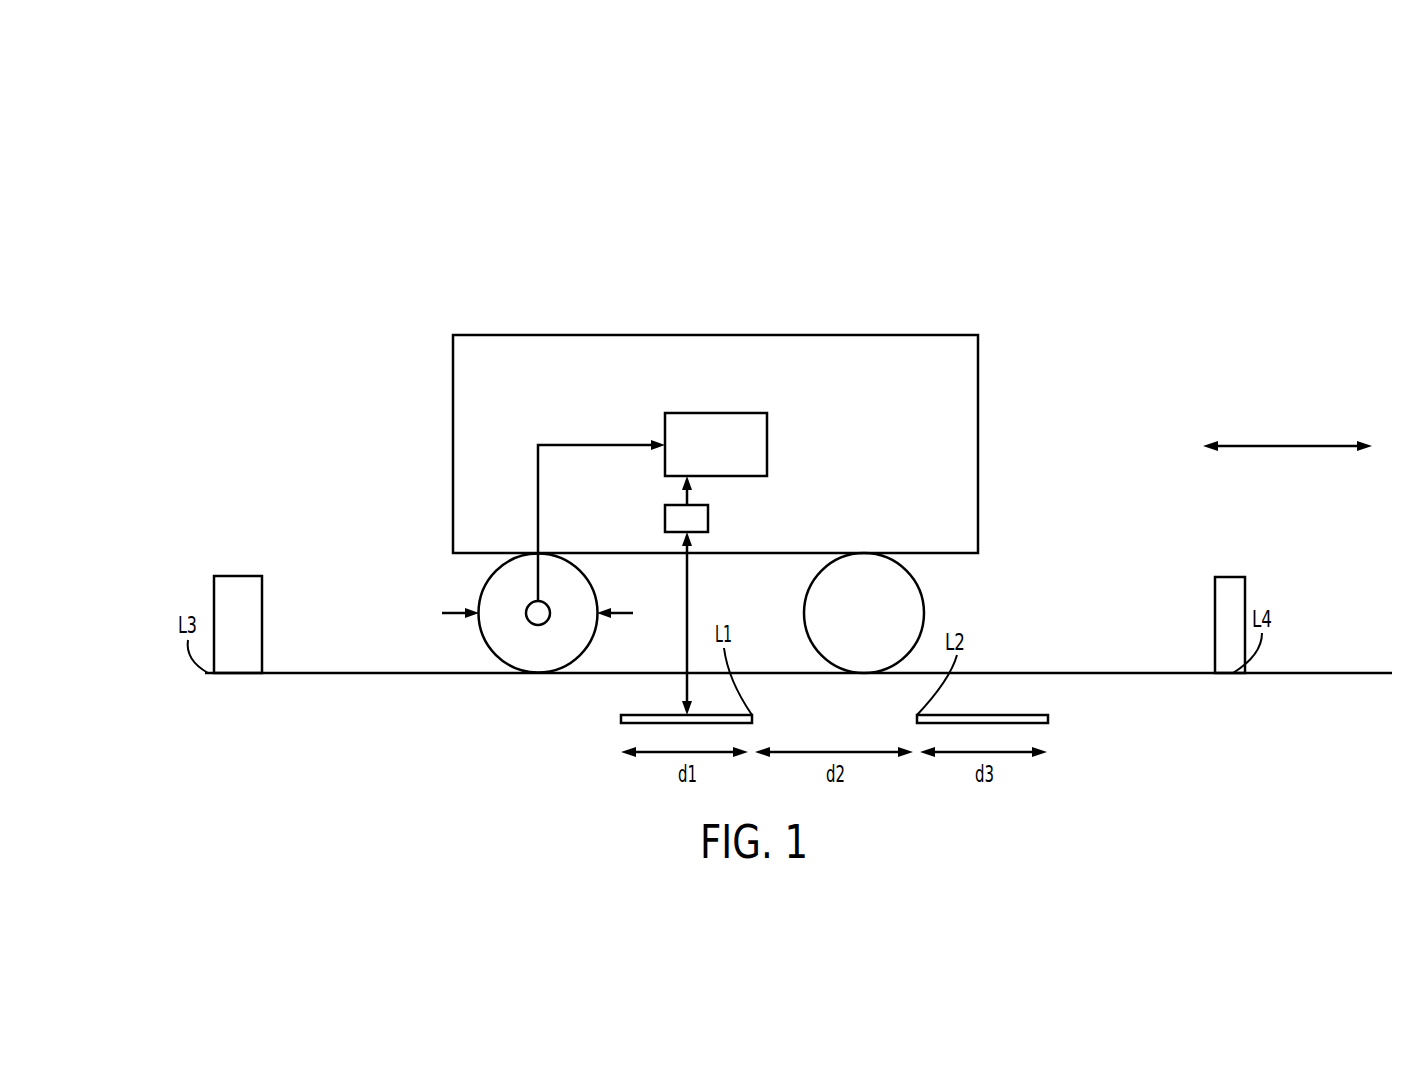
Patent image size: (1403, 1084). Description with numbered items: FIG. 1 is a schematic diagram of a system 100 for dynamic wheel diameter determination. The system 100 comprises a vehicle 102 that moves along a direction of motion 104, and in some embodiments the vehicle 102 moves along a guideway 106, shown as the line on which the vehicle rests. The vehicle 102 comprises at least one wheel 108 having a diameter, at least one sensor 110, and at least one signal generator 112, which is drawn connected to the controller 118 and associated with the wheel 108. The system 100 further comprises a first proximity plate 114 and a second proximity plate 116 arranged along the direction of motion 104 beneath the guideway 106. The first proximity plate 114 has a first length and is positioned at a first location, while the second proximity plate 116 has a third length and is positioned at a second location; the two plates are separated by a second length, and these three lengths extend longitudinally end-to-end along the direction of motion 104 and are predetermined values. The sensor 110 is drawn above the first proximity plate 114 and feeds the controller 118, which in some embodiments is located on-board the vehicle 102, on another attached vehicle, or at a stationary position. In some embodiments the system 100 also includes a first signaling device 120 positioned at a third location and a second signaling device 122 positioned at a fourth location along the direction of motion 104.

The system 100 is at (366, 221).
The vehicle 102 is at (881, 335).
The direction of motion 104 is at (1293, 446).
The guideway 106 is at (1340, 673).
The wheel 108 is at (481, 637).
The sensor 110 is at (708, 518).
The signal generator 112 is at (527, 608).
The first proximity plate 114 is at (621, 719).
The second proximity plate 116 is at (1048, 719).
The controller 118 is at (767, 427).
The first signaling device 120 is at (238, 576).
The second signaling device 122 is at (1215, 613).